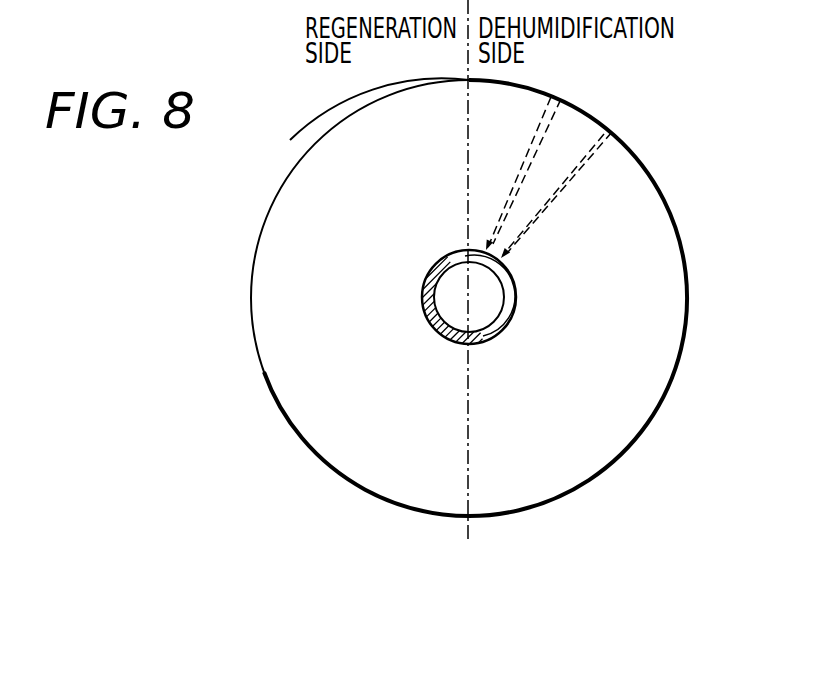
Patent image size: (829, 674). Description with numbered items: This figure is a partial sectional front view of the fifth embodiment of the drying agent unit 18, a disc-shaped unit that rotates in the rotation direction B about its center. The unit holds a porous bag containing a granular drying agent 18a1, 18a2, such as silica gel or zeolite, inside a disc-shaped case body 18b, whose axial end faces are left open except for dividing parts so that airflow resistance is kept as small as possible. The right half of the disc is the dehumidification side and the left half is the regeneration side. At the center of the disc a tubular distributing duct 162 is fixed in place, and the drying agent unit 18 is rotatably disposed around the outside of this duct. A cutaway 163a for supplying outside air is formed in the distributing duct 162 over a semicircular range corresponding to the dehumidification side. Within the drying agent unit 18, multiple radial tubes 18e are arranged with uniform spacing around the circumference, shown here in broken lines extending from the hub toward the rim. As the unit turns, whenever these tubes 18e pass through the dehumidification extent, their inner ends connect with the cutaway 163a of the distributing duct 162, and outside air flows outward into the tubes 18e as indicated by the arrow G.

The drying agent unit 18 is at (257, 242).
The case body 18b is at (272, 203).
The radial tubes 18e is at (553, 143).
The granular drying agent 18a1 is at (574, 428).
The granular drying agent 18a2 is at (388, 433).
The distributing duct 162 is at (427, 318).
The cutaway 163a is at (507, 300).
The arrow indicating outside air flow G is at (513, 279).
The rotation direction B is at (318, 100).